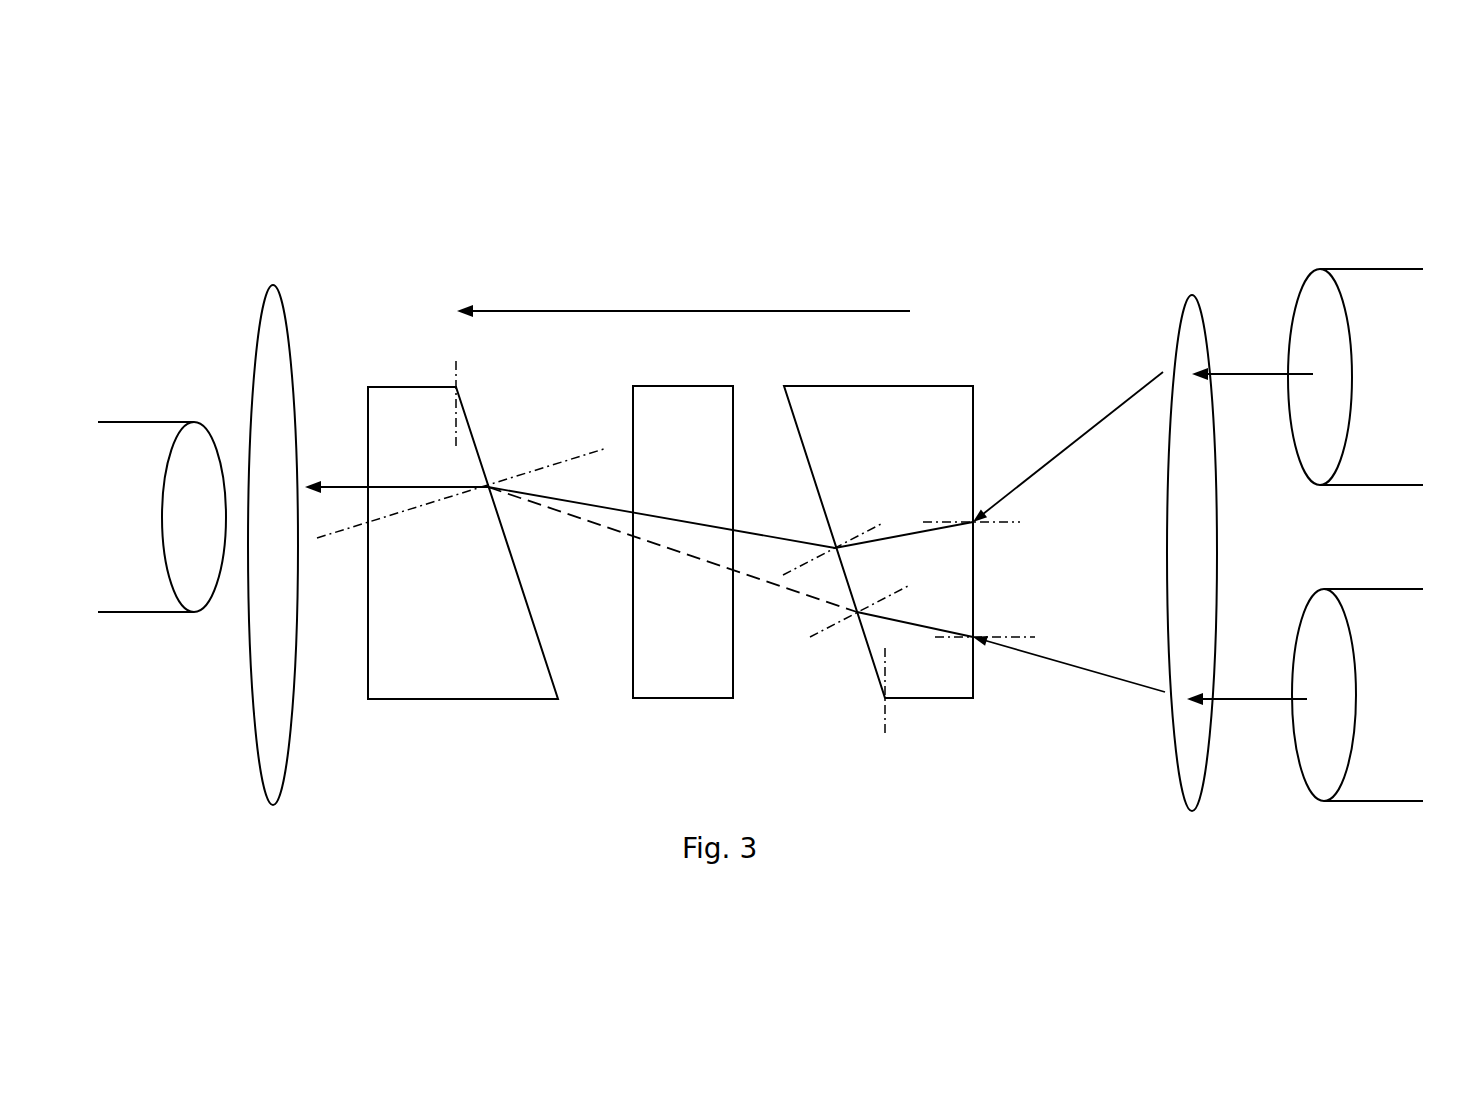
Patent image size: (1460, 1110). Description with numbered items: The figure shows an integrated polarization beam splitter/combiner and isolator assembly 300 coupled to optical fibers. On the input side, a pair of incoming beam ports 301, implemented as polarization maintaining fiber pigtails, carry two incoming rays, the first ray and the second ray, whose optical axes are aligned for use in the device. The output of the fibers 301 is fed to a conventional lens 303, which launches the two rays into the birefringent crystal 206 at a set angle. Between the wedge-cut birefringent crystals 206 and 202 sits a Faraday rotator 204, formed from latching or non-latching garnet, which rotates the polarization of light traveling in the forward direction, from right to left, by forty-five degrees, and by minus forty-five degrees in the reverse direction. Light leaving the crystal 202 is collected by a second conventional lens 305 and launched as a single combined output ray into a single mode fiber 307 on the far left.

The optical circulator / isolator assembly 300 is at (236, 103).
The incoming beam ports 301 is at (1338, 492).
The lens 303 is at (1193, 817).
The lens 305 is at (264, 812).
The single mode fiber 307 is at (183, 622).
The birefringent crystal 202 is at (540, 710).
The Faraday rotator 204 is at (705, 710).
The birefringent crystal 206 is at (908, 718).